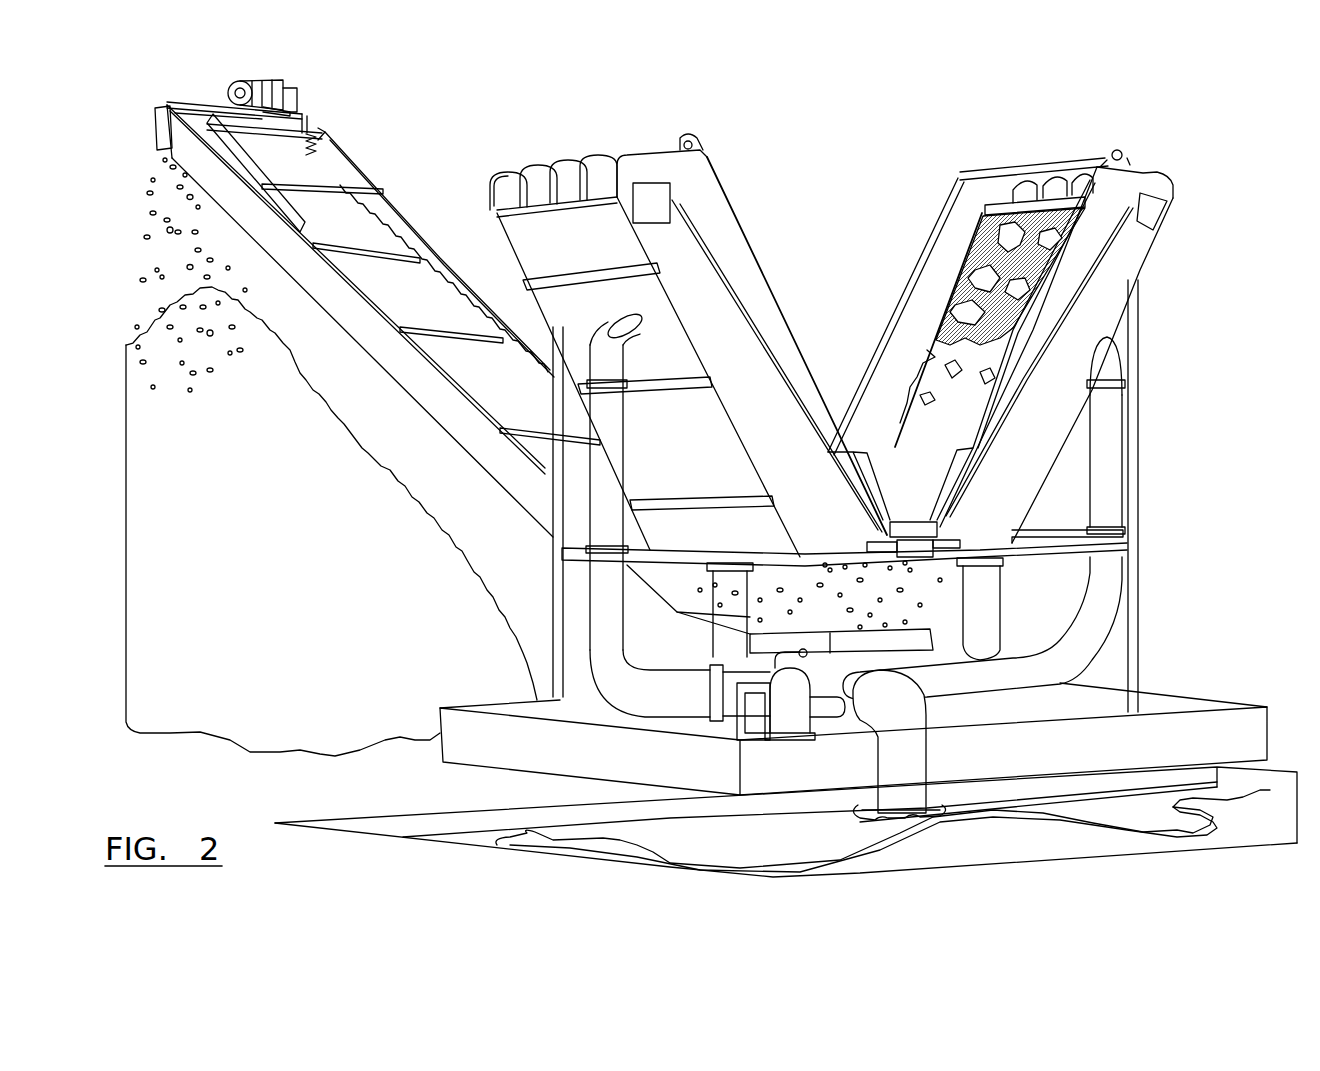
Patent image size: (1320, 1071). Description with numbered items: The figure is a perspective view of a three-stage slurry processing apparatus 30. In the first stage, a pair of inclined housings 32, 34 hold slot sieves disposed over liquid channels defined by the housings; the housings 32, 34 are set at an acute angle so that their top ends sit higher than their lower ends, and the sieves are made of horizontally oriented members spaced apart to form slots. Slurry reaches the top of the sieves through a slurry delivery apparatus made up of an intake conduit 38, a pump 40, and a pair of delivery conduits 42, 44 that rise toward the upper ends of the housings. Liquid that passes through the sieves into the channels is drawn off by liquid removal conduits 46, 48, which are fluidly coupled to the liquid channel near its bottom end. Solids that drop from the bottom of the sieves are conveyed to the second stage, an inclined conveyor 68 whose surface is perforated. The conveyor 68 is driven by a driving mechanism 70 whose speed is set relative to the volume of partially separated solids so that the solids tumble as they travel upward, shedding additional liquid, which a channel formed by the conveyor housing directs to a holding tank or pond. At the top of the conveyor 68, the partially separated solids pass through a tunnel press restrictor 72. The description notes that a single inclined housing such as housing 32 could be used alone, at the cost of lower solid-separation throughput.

The three-stage slurry processing apparatus 30 is at (1220, 130).
The inclined housing 32 is at (730, 197).
The inclined housing 34 is at (1122, 160).
The intake conduit 38 is at (903, 750).
The pump 40 is at (792, 693).
The delivery conduit 42 is at (623, 420).
The delivery conduit 44 is at (1097, 617).
The liquid removal conduit 46 is at (993, 587).
The liquid removal conduit 48 is at (727, 628).
The inclined conveyor 68 is at (366, 352).
The driving mechanism 70 is at (293, 80).
The tunnel press restrictor 72 is at (327, 175).